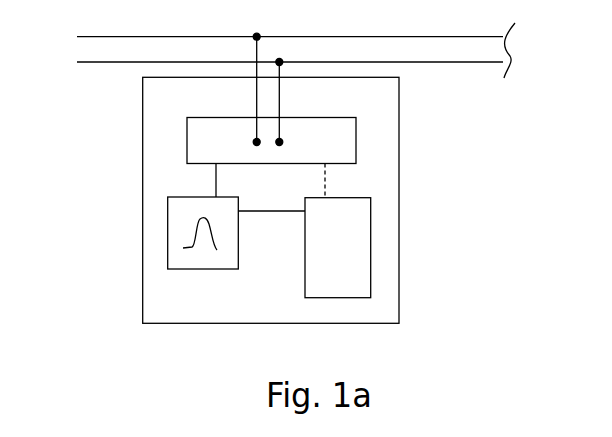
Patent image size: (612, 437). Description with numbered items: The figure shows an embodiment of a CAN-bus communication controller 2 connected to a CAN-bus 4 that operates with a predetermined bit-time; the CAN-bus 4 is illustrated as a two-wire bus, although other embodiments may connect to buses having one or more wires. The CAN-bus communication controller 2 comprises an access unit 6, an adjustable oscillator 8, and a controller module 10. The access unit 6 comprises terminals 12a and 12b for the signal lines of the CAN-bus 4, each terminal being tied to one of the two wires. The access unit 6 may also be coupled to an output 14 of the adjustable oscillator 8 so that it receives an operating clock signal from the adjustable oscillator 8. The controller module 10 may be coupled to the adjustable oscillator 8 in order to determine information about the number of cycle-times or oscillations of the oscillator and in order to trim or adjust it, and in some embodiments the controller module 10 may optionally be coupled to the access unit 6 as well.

The CAN-bus communication controller 2 is at (399, 195).
The CAN-bus 4 is at (510, 57).
The access unit 6 is at (357, 150).
The adjustable oscillator 8 is at (168, 248).
The controller module 10 is at (371, 278).
The terminal 12a is at (279, 142).
The terminal 12b is at (256, 142).
The output 14 is at (212, 196).